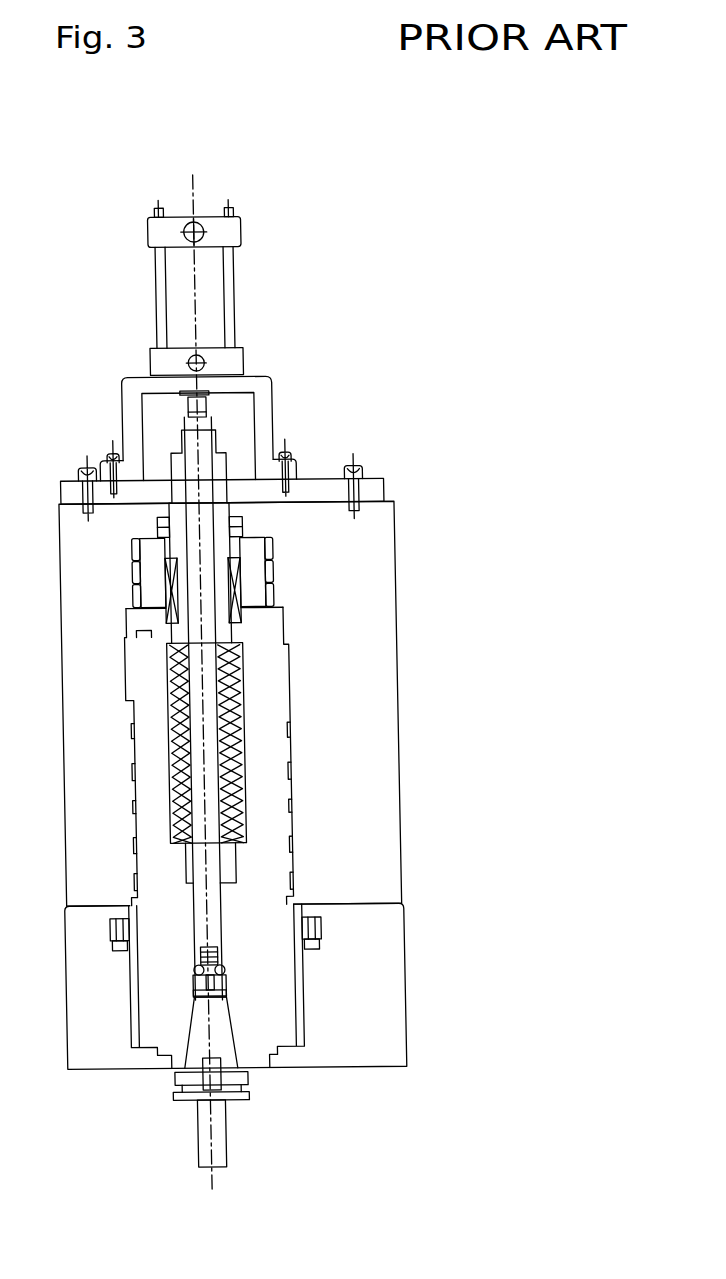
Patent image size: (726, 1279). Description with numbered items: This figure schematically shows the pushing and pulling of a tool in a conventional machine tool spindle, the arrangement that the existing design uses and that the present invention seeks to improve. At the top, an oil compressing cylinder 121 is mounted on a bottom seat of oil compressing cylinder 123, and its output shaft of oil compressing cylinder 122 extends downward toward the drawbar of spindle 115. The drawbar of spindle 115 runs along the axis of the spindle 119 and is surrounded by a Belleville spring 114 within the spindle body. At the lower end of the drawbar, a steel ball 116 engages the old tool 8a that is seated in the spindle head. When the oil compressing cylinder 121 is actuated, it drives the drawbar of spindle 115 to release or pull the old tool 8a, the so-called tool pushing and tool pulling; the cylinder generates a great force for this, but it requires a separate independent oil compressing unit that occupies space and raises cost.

The oil compressing cylinder 121 is at (213, 305).
The output shaft of oil compressing cylinder 122 is at (205, 400).
The bottom seat of oil compressing cylinder 123 is at (263, 418).
The drawbar of spindle 115 is at (213, 638).
The Belleville spring 114 is at (243, 790).
The spindle 119 is at (327, 953).
The steel ball 116 is at (223, 968).
The old tool 8a is at (215, 1117).